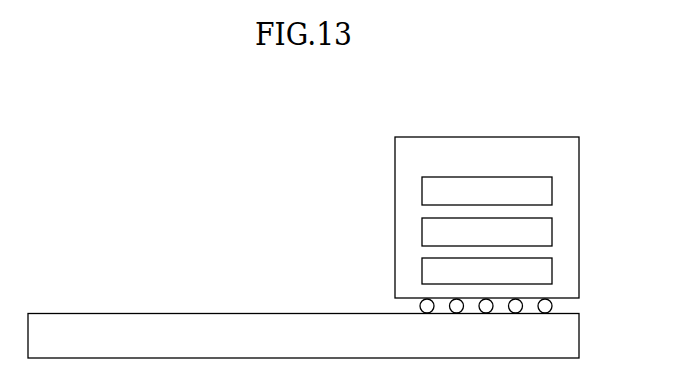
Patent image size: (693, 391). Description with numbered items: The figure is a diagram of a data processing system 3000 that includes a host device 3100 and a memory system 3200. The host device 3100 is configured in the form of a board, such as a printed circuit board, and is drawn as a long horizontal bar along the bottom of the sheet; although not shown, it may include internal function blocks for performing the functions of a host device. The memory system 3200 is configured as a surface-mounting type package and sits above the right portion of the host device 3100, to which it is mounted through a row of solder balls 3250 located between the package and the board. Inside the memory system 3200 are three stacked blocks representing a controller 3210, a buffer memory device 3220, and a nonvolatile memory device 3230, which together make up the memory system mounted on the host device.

The data processing system 3000 is at (100, 112).
The host device 3100 is at (303, 336).
The memory system 3200 is at (487, 217).
The controller 3210 is at (487, 191).
The buffer memory device 3220 is at (487, 232).
The nonvolatile memory device 3230 is at (487, 271).
The solder balls 3250 is at (562, 308).